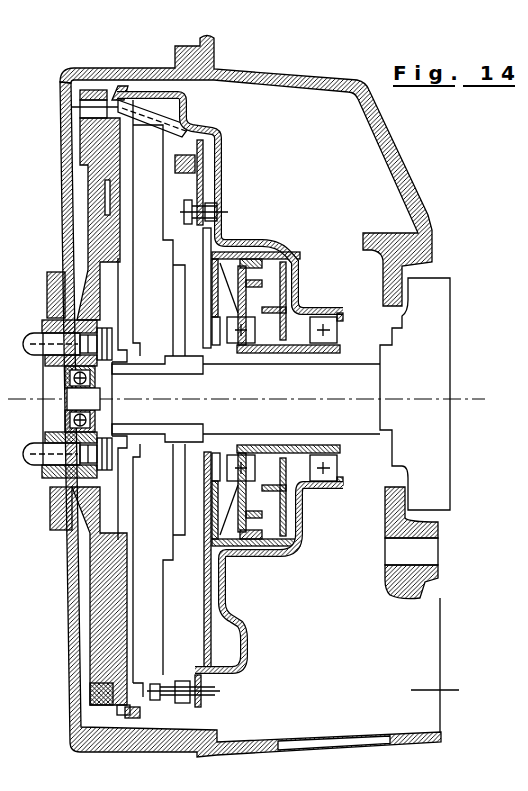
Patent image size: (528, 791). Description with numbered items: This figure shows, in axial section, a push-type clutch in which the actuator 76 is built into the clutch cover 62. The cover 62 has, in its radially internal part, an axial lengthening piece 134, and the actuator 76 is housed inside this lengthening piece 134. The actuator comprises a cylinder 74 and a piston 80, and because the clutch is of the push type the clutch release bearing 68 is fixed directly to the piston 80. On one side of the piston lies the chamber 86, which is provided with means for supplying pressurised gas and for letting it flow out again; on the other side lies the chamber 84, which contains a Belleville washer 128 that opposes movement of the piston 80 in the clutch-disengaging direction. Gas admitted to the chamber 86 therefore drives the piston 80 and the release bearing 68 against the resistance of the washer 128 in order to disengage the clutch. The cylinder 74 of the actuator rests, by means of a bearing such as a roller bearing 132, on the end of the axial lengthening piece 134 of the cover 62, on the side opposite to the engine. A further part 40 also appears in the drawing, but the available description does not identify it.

The flywheel 40 is at (82, 148).
The cover 62 is at (222, 155).
The Belleville washer 128 is at (213, 212).
The actuator 76 is at (272, 247).
The chamber 86 is at (305, 272).
The cylinder 74 is at (288, 298).
The clutch release bearing 68 is at (212, 341).
The roller bearing 132 is at (337, 345).
The chamber 84 is at (211, 523).
The piston 80 is at (250, 508).
The axial lengthening piece 134 is at (303, 545).